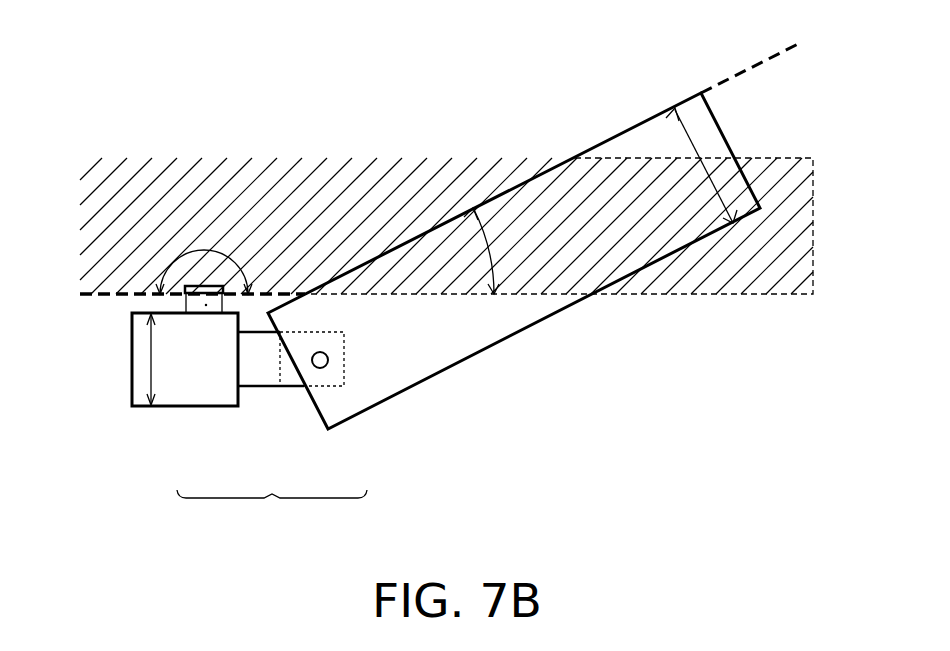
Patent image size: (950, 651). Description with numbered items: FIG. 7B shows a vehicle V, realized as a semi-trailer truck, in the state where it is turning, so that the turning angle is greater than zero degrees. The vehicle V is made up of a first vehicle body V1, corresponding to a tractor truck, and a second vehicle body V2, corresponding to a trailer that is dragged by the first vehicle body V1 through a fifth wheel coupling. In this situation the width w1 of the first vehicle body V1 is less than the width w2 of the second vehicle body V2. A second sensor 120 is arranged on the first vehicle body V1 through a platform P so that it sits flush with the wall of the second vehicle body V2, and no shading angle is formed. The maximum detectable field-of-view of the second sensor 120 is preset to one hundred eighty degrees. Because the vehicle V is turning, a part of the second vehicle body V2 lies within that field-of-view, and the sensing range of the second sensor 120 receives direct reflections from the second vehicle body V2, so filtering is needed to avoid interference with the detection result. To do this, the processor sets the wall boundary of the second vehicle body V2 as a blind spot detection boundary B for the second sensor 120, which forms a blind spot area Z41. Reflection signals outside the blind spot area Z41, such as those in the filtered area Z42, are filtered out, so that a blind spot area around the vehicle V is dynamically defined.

The blind spot area Z41 is at (367, 187).
The filtered area Z42 is at (813, 255).
The first vehicle body V1 is at (183, 410).
The second vehicle body V2 is at (340, 423).
The vehicle V is at (272, 513).
The second sensor 120 is at (183, 299).
The platform P is at (206, 305).
The width of the first vehicle body w1 is at (150, 342).
The width of the second vehicle body w2 is at (690, 130).
The blind spot detection boundary B is at (759, 63).